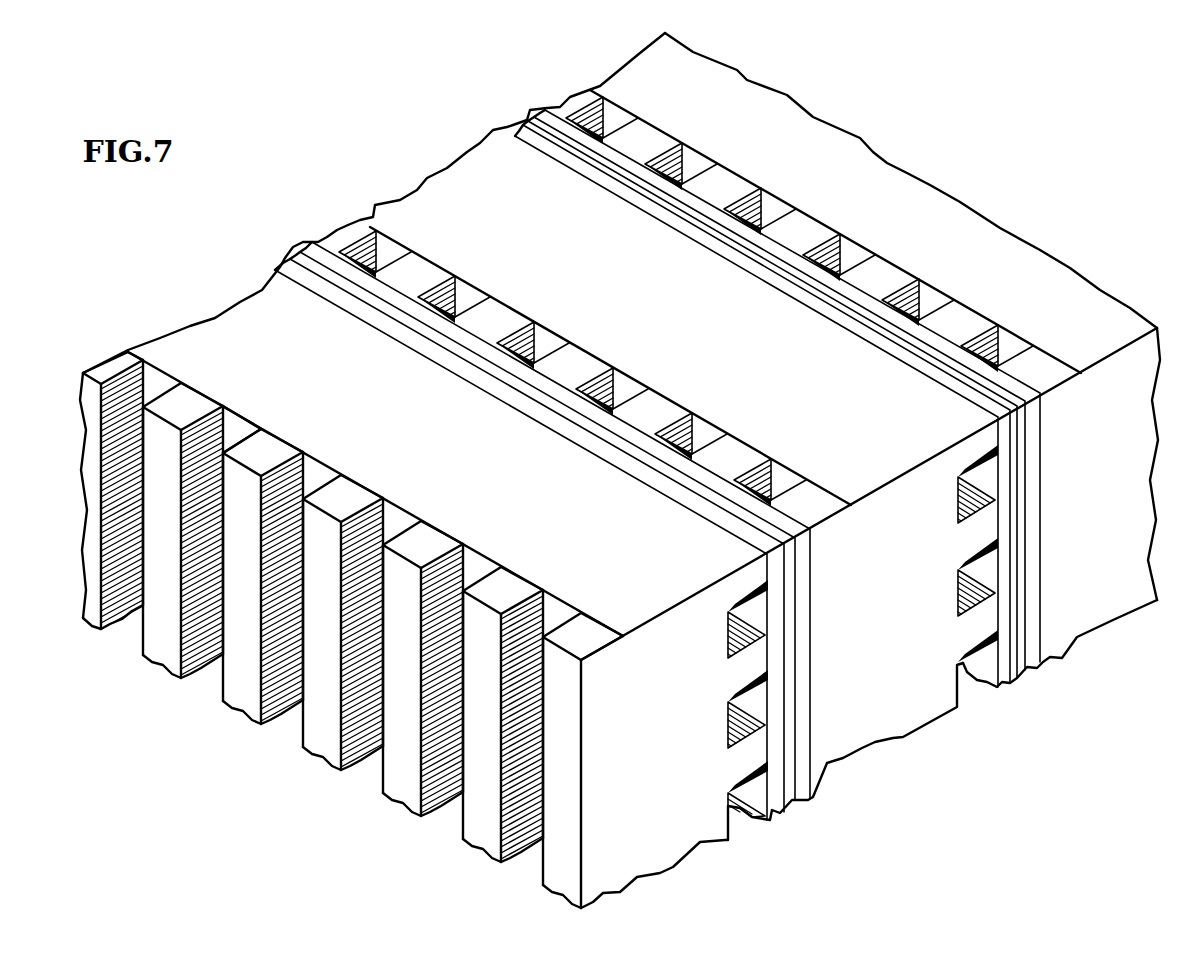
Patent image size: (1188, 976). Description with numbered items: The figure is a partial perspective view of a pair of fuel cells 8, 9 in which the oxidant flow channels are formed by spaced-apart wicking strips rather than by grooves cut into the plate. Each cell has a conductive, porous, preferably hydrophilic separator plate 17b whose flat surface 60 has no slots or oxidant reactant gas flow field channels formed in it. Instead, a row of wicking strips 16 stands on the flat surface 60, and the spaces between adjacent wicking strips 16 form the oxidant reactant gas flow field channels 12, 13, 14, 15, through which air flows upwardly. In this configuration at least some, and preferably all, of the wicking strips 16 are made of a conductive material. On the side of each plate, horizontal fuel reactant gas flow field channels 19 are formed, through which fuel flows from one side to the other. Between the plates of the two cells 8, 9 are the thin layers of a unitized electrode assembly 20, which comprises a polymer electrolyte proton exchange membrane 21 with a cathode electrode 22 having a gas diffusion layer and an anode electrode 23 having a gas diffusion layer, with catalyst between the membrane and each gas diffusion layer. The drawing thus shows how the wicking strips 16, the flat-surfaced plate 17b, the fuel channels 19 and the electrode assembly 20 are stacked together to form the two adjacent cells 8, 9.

The fuel cell 8 is at (638, 900).
The fuel cell 9 is at (872, 766).
The oxidant reactant gas flow field channel 12 is at (527, 860).
The oxidant reactant gas flow field channel 13 is at (447, 812).
The oxidant reactant gas flow field channel 14 is at (367, 766).
The oxidant reactant gas flow field channel 15 is at (287, 720).
The wicking strip 16 is at (120, 362).
The separator plate 17b is at (469, 447).
The fuel reactant gas flow field channel 19 is at (758, 620).
The unitized electrode assembly 20 is at (297, 252).
The proton exchange membrane 21 is at (735, 515).
The cathode electrode 22 is at (760, 540).
The anode electrode 23 is at (785, 515).
The flat surface 60 is at (235, 422).